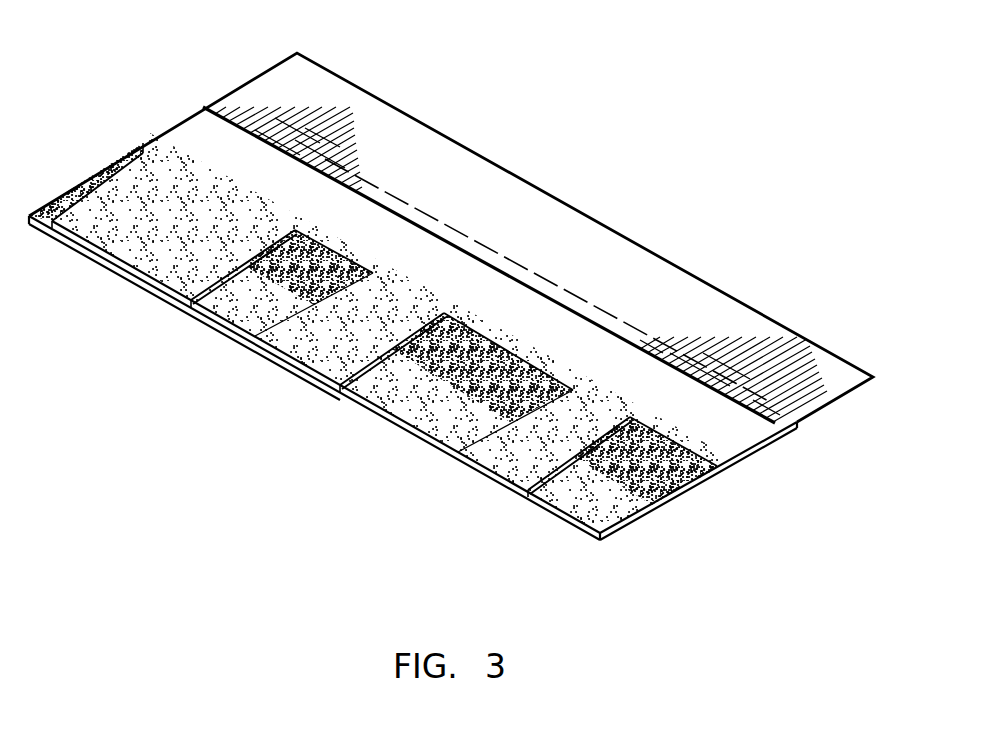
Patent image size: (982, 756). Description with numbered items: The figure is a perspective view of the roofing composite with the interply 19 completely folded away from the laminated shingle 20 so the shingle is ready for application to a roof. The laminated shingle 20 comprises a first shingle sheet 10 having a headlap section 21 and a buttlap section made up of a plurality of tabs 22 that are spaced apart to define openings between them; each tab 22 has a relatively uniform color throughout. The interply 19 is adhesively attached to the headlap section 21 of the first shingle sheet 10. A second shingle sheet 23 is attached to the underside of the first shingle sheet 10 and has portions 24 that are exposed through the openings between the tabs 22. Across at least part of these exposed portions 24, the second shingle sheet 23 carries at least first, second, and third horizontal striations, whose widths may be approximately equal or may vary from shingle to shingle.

The first shingle sheet 10 is at (193, 130).
The interply 19 is at (431, 148).
The laminated shingle 20 is at (772, 403).
The headlap section 21 is at (757, 448).
The tabs 22 is at (142, 245).
The second shingle sheet 23 is at (672, 500).
The exposed portions 24 is at (247, 302).